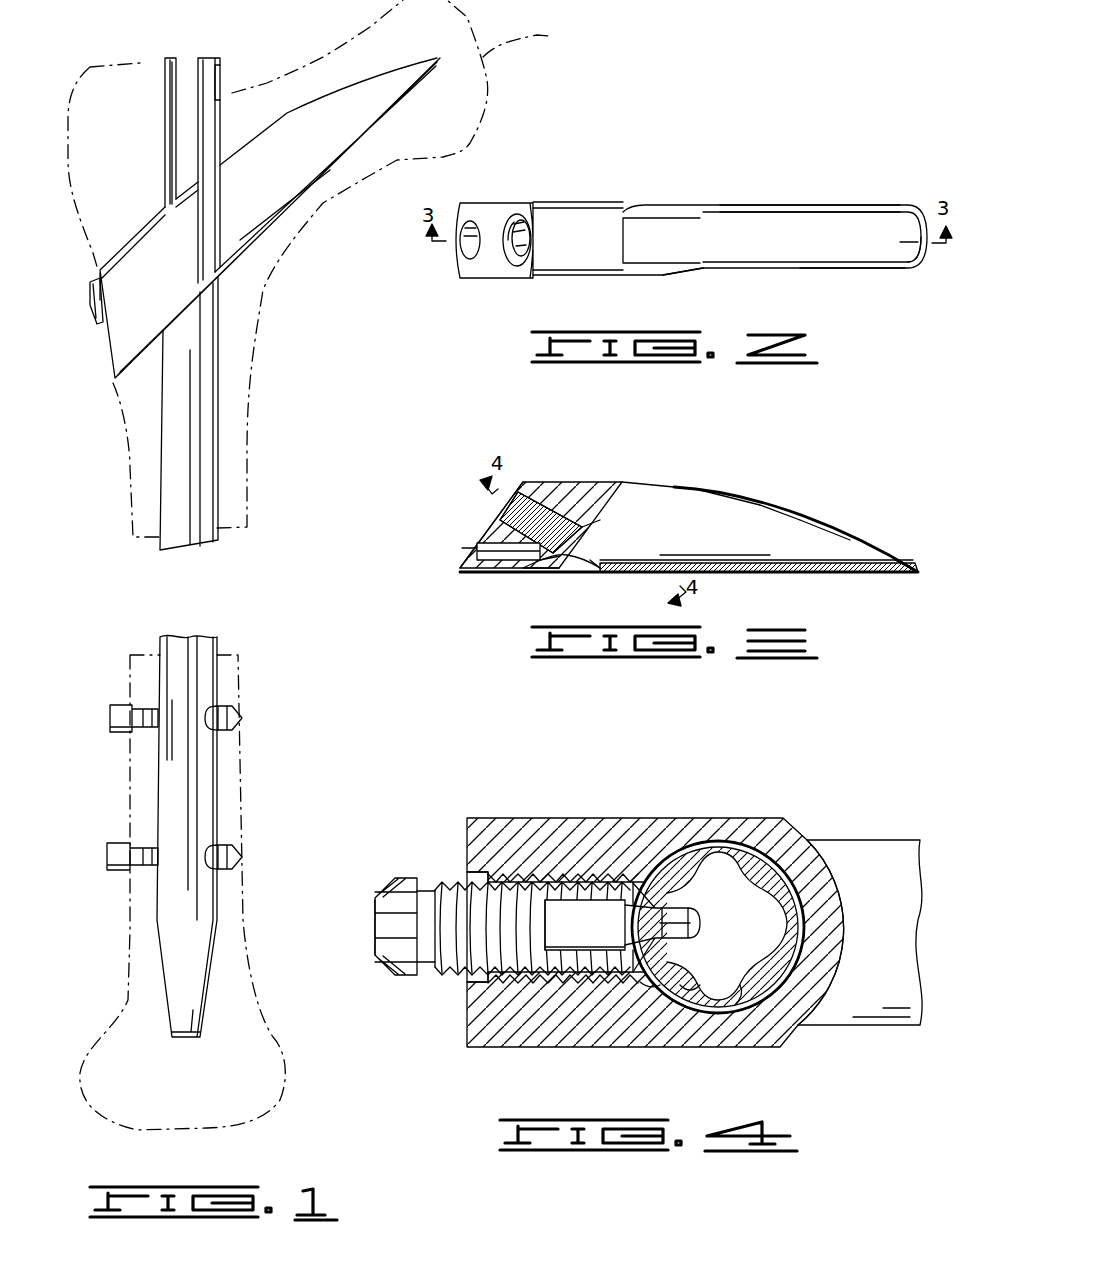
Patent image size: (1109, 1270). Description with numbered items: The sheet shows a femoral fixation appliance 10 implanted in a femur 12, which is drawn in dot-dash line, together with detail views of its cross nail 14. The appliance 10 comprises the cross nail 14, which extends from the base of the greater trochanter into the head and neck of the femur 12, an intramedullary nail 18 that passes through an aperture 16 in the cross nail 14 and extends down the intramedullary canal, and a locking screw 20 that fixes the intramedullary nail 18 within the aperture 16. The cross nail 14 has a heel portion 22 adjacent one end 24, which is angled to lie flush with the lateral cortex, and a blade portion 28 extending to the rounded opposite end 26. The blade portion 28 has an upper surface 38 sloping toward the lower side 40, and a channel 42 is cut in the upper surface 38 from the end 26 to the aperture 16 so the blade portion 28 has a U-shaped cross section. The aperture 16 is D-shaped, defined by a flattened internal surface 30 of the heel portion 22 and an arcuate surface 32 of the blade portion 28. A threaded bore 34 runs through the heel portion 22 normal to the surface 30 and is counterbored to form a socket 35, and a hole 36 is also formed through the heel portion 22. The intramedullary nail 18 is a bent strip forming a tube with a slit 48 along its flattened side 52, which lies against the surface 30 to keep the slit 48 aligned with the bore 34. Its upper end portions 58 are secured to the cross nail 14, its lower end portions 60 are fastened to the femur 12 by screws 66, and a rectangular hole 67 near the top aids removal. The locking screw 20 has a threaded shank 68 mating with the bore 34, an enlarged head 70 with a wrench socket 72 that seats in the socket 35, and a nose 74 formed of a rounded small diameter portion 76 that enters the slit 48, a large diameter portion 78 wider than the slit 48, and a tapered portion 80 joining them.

In FIG. 1, the appliance 10 is at (220, 404).
In FIG. 1, the femur 12 is at (321, 565).
In FIG. 1, the cross nail 14 is at (287, 116).
In FIG. 2, the cross nail 14 is at (581, 201).
In FIG. 3, the cross nail 14 is at (716, 486).
In FIG. 4, the cross nail 14 is at (820, 839).
In FIG. 2, the aperture 16 is at (642, 237).
In FIG. 3, the aperture 16 is at (638, 495).
In FIG. 4, the aperture 16 is at (767, 858).
In FIG. 1, the intramedullary nail 18 is at (190, 54).
In FIG. 4, the intramedullary nail 18 is at (735, 850).
In FIG. 1, the locking screw 20 is at (91, 300).
In FIG. 4, the locking screw 20 is at (390, 963).
In FIG. 1, the heel portion 22 is at (130, 270).
In FIG. 2, the heel portion 22 is at (548, 275).
In FIG. 3, the heel portion 22 is at (570, 482).
In FIG. 4, the heel portion 22 is at (512, 818).
In FIG. 1, the end 24 is at (110, 370).
In FIG. 2, the end 24 is at (460, 272).
In FIG. 3, the end 24 is at (484, 527).
In FIG. 2, the opposite end 26 is at (921, 270).
In FIG. 3, the opposite end 26 is at (920, 575).
In FIG. 1, the blade portion 28 is at (263, 200).
In FIG. 2, the blade portion 28 is at (760, 230).
In FIG. 3, the blade portion 28 is at (792, 525).
In FIG. 3, the flattened internal surface 30 is at (558, 556).
In FIG. 4, the flattened internal surface 30 is at (648, 990).
In FIG. 2, the surface 32 is at (655, 270).
In FIG. 3, the surface 32 is at (593, 560).
In FIG. 4, the surface 32 is at (740, 1002).
In FIG. 2, the threaded bore 34 is at (517, 226).
In FIG. 3, the threaded bore 34 is at (582, 522).
In FIG. 4, the threaded bore 34 is at (560, 876).
In FIG. 2, the socket 35 is at (510, 258).
In FIG. 3, the socket 35 is at (521, 492).
In FIG. 4, the socket 35 is at (470, 872).
In FIG. 2, the hole 36 is at (466, 245).
In FIG. 3, the hole 36 is at (498, 561).
In FIG. 2, the upper surface 38 is at (828, 208).
In FIG. 3, the upper surface 38 is at (760, 510).
In FIG. 3, the lower side 40 is at (765, 573).
In FIG. 2, the channel 42 is at (847, 239).
In FIG. 3, the channel 42 is at (823, 542).
In FIG. 4, the slit 48 is at (692, 925).
In FIG. 4, the side 52 is at (586, 858).
In FIG. 1, the upper end portions 58 is at (183, 133).
In FIG. 1, the lower end portions 60 is at (165, 770).
In FIG. 1, the screws 66 is at (118, 708).
In FIG. 1, the rectangular hole 67 is at (222, 78).
In FIG. 4, the shank 68 is at (458, 970).
In FIG. 4, the head 70 is at (403, 878).
In FIG. 4, the socket 72 is at (393, 911).
In FIG. 4, the nose 74 is at (553, 977).
In FIG. 4, the small diameter portion 76 is at (688, 992).
In FIG. 4, the large diameter portion 78 is at (594, 951).
In FIG. 4, the tapered portion 80 is at (666, 870).